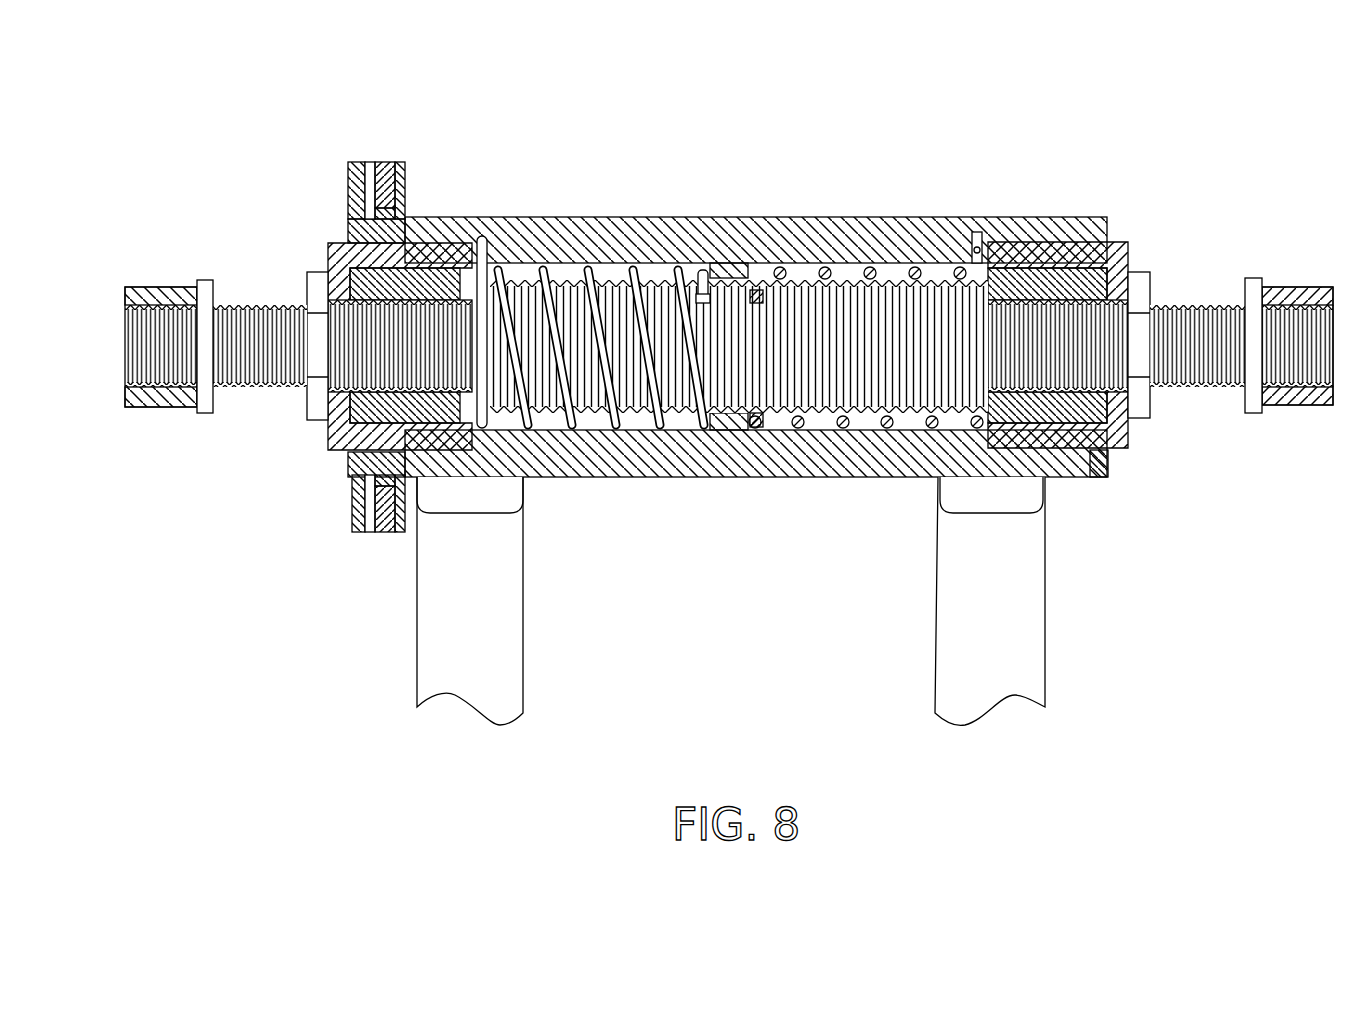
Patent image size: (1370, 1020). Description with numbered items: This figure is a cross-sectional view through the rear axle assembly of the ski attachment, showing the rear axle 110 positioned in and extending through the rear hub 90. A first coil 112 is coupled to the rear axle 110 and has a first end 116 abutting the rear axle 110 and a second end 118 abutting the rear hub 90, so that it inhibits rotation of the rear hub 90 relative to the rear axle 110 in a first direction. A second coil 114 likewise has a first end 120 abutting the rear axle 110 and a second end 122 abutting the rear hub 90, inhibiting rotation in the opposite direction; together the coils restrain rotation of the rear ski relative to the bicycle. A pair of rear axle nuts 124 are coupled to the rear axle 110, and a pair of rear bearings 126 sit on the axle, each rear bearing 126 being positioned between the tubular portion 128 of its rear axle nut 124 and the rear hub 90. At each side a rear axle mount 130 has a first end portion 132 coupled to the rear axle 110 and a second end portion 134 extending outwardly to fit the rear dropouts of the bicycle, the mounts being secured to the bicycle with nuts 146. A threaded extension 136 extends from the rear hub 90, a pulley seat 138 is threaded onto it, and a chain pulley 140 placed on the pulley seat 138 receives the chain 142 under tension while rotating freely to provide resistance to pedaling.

The rear hub 90 is at (848, 478).
The rear axle 110 is at (1113, 448).
The first coil 112 is at (547, 268).
The second coil 114 is at (754, 430).
The first end of first coil 116 is at (478, 236).
The second end of first coil 118 is at (698, 300).
The first end of second coil 120 is at (980, 232).
The second end of second coil 122 is at (752, 290).
The rear axle nut 124 is at (340, 243).
The rear bearing 126 is at (360, 253).
The tubular portion 128 is at (400, 396).
The rear axle mount 130 is at (223, 416).
The first end portion 132 is at (360, 318).
The second end portion 134 is at (242, 390).
The threaded extension 136 is at (405, 210).
The pulley seat 138 is at (350, 177).
The chain pulley 140 is at (370, 162).
The chain 142 is at (383, 162).
The nut 146 is at (133, 407).